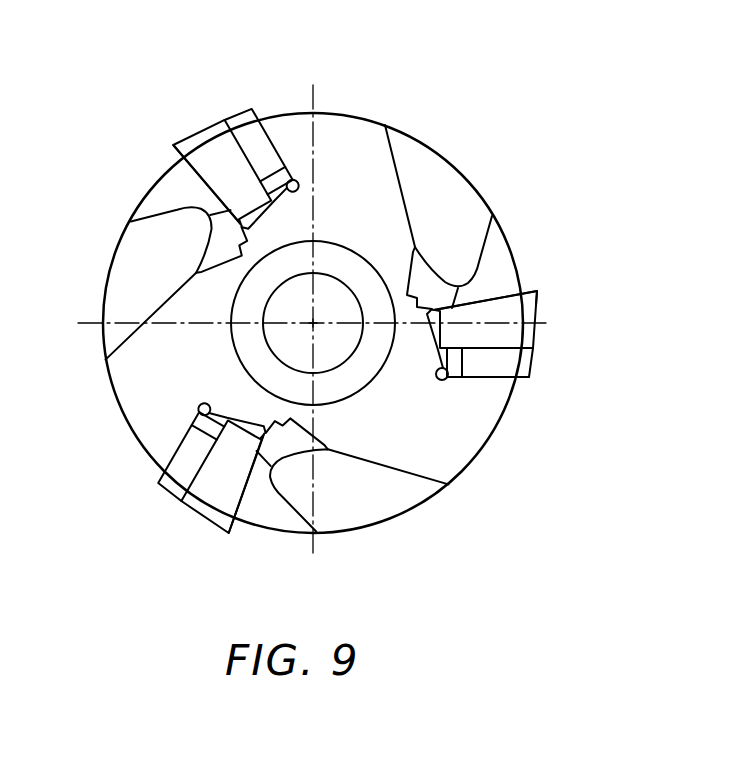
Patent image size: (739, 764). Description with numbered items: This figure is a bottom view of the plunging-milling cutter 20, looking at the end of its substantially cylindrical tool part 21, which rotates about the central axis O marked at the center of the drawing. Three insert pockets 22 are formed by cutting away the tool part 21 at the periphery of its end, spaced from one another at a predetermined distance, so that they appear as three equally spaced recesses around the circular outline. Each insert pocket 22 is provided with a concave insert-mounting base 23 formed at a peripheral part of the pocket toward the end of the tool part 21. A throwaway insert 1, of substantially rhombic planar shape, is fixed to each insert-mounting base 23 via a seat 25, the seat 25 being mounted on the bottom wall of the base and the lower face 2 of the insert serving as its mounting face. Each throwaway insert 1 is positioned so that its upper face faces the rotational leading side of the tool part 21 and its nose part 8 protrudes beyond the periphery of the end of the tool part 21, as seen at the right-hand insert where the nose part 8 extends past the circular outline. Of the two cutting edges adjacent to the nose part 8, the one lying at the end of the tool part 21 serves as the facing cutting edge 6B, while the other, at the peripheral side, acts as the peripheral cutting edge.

The plunging-milling cutter 20 is at (277, 104).
The tool part 21 is at (350, 113).
The insert pocket 22 is at (437, 170).
The throwaway insert 1 is at (538, 311).
The lower face 2 is at (462, 377).
The facing cutting edge 6B is at (497, 294).
The nose part 8 is at (538, 291).
The seat 25 is at (530, 356).
The insert-mounting base 23 is at (483, 377).
The central axis O is at (313, 323).